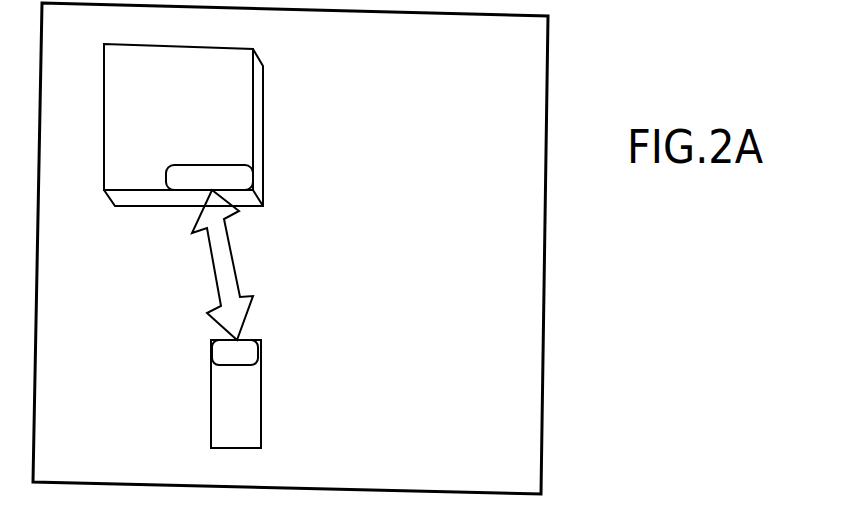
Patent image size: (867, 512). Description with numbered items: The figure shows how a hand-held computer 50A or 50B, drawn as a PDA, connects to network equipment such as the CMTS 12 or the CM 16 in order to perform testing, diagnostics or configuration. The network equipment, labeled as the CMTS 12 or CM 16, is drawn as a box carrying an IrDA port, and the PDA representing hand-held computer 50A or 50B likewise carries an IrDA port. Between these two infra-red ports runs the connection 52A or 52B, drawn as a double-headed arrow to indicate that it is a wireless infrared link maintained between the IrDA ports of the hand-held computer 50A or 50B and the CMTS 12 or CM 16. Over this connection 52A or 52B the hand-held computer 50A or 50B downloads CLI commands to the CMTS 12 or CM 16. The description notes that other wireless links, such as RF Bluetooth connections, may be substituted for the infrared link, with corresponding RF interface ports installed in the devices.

The CMTS 12 is at (254, 125).
The CM 16 is at (257, 117).
The connection 52A is at (306, 265).
The connection 52B is at (234, 281).
The hand-held computer 50A is at (335, 394).
The hand-held computer 50B is at (256, 421).